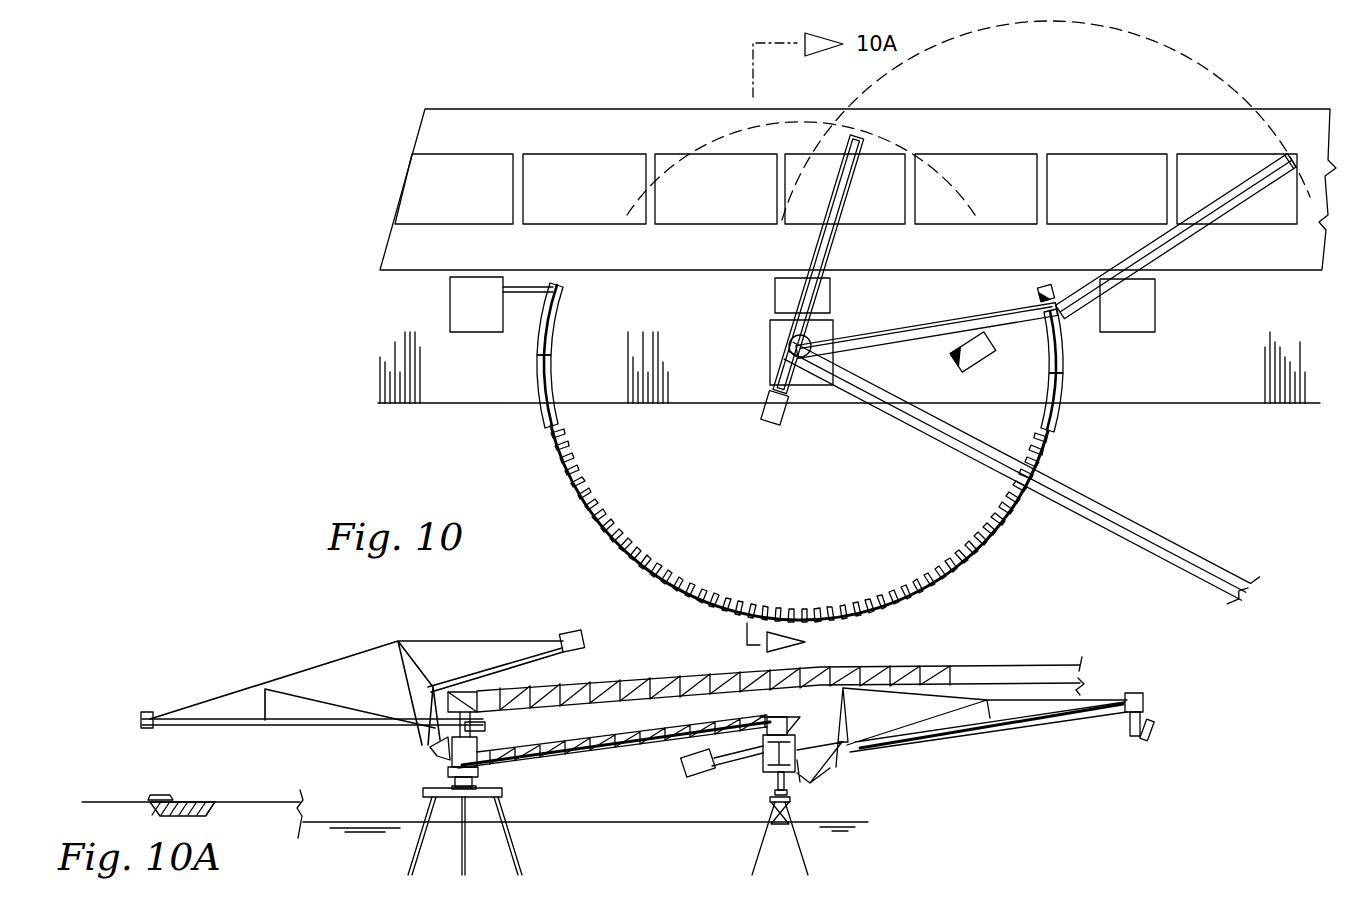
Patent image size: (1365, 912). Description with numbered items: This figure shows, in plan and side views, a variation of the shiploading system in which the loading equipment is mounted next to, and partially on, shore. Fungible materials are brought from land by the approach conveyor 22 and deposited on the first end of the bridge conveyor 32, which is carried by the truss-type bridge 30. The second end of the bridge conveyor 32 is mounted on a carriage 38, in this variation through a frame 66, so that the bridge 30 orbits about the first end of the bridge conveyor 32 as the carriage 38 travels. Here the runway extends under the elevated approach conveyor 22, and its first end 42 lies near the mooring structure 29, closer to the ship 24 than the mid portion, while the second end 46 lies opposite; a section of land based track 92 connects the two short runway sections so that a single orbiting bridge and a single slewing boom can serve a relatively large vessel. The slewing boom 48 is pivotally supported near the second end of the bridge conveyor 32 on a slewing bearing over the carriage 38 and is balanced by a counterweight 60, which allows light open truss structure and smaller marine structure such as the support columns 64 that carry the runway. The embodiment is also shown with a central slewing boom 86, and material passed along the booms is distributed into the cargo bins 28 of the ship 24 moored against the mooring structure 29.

In FIG. 10, the approach conveyor 22 is at (1136, 526).
In FIG. 10A, the approach conveyor 22 is at (614, 741).
In FIG. 10, the ship 24 is at (686, 270).
In FIG. 10, the cargo bins 28 is at (746, 189).
In FIG. 10, the mooring structure 29 is at (462, 333).
In FIG. 10, the bridge 30 is at (972, 322).
In FIG. 10, the bridge conveyor 32 is at (884, 352).
In FIG. 10, the carriage 38 is at (1042, 295).
In FIG. 10A, the carriage 38 is at (790, 790).
In FIG. 10, the first end of runway 42 is at (567, 302).
In FIG. 10, the second end of runway 46 is at (548, 428).
In FIG. 10, the slewing boom 48 is at (1181, 238).
In FIG. 10A, the slewing boom 48 is at (995, 727).
In FIG. 10, the counterweight 60 is at (762, 424).
In FIG. 10A, the counterweight 60 is at (722, 761).
In FIG. 10A, the support columns 64 is at (774, 822).
In FIG. 10A, the frame 66 is at (764, 770).
In FIG. 10, the loading boom 86 is at (833, 248).
In FIG. 10A, the loading boom 86 is at (272, 728).
In FIG. 10, the land based track 92 is at (817, 610).
In FIG. 10A, the land based track 92 is at (172, 796).